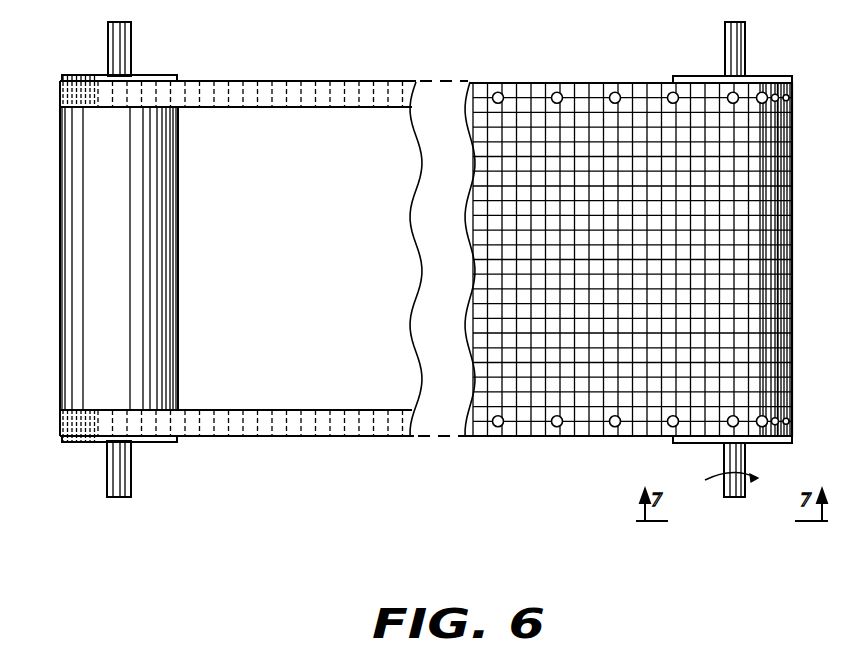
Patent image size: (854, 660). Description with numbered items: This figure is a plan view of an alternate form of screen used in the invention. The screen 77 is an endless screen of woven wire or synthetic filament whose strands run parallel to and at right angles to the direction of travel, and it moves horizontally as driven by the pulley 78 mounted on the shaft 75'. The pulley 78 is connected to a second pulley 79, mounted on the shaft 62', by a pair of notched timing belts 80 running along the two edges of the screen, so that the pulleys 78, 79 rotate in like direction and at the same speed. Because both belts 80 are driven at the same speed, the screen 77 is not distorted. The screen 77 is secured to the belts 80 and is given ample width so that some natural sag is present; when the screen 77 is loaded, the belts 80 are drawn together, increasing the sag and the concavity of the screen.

The shaft 62' is at (717, 281).
The shaft 75' is at (87, 469).
The screen 77 is at (517, 127).
The pulley 78 is at (84, 322).
The pulley 79 is at (766, 78).
The notched timing belts 80 is at (292, 92).